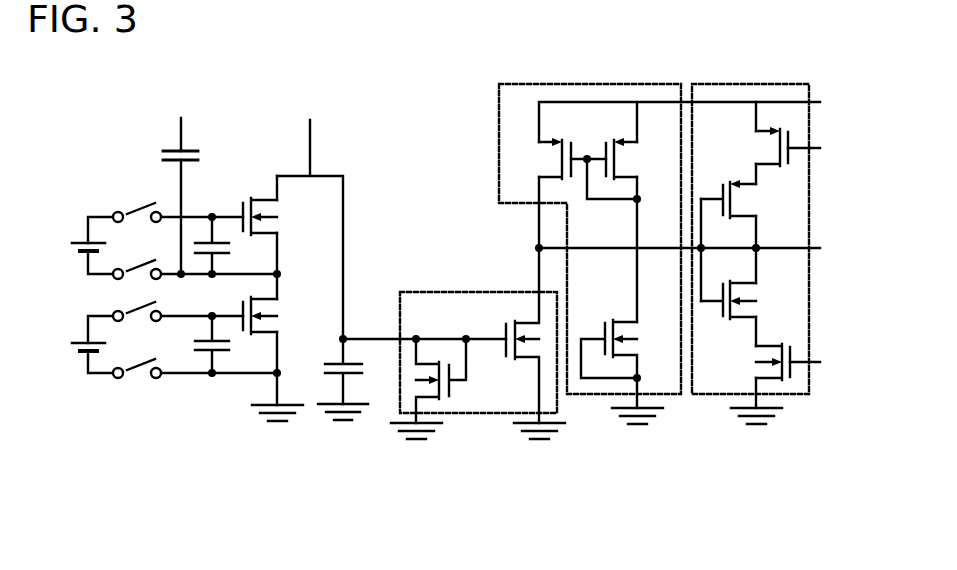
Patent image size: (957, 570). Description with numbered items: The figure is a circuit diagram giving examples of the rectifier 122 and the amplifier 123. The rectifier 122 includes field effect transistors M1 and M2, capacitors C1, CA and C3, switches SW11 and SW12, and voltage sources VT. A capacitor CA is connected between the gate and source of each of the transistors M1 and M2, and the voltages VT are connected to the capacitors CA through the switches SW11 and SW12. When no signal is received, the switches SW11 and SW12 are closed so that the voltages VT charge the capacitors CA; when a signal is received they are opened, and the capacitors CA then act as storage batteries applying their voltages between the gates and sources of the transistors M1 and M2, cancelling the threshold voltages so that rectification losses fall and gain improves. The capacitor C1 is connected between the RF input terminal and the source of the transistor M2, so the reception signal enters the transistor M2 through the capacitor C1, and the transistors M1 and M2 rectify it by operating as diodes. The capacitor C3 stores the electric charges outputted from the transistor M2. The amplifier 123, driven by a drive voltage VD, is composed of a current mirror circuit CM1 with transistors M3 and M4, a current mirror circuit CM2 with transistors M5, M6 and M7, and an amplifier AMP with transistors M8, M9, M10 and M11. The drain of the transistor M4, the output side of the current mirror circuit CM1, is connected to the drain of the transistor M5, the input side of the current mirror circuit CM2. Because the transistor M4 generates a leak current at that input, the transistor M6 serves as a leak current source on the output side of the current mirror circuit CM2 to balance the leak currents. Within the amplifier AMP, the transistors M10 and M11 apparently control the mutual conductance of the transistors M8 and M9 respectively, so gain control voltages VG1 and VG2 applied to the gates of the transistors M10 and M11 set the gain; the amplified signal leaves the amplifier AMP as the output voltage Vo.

The rectifier 122 is at (382, 472).
The amplifier 123 is at (390, 472).
The capacitor C1 is at (195, 154).
The capacitor CA is at (226, 295).
The switch SW11 is at (174, 241).
The switch SW12 is at (174, 340).
The transistor M1 is at (278, 315).
The transistor M2 is at (278, 216).
The capacitor C3 is at (350, 379).
The current mirror circuit CM1 is at (478, 343).
The transistor M3 is at (439, 389).
The transistor M4 is at (532, 343).
The current mirror circuit CM2 is at (659, 241).
The transistor M5 is at (538, 158).
The transistor M6 is at (629, 372).
The transistor M7 is at (639, 158).
The amplifier AMP is at (778, 241).
The transistor M8 is at (747, 300).
The transistor M9 is at (748, 199).
The transistor M10 is at (749, 384).
The transistor M11 is at (752, 146).
The gain control voltage VG1 is at (827, 363).
The gain control voltage VG2 is at (826, 151).